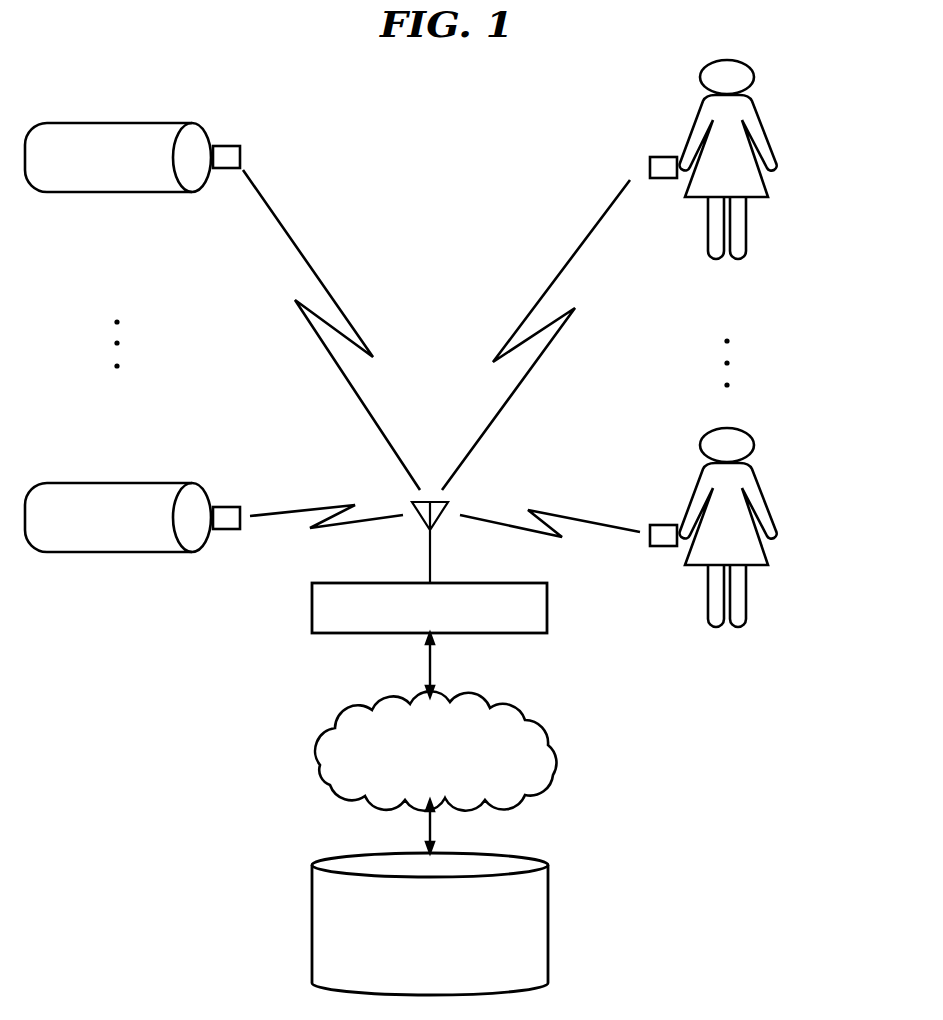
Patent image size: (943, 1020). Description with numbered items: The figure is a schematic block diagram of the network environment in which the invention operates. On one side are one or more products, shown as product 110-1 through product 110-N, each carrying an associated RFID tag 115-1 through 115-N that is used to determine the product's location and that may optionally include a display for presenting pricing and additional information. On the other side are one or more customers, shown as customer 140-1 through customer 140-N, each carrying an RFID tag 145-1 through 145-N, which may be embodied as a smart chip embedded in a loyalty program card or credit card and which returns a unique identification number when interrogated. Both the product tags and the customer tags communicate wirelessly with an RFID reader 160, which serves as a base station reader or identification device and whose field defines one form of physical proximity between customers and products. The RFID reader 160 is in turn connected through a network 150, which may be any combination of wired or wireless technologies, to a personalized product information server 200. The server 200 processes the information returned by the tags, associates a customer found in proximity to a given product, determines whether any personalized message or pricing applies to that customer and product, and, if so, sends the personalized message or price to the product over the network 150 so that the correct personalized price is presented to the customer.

The product 110-1 is at (78, 123).
The RFID tag 115-1 is at (236, 146).
The product 110-N is at (78, 483).
The RFID tag 115-N is at (236, 507).
The customer 140-1 is at (765, 145).
The RFID tag 145-1 is at (660, 157).
The customer 140-N is at (765, 513).
The RFID tag 145-N is at (660, 525).
The RFID reader 160 is at (312, 607).
The network 150 is at (313, 752).
The personalized product information server 200 is at (312, 931).